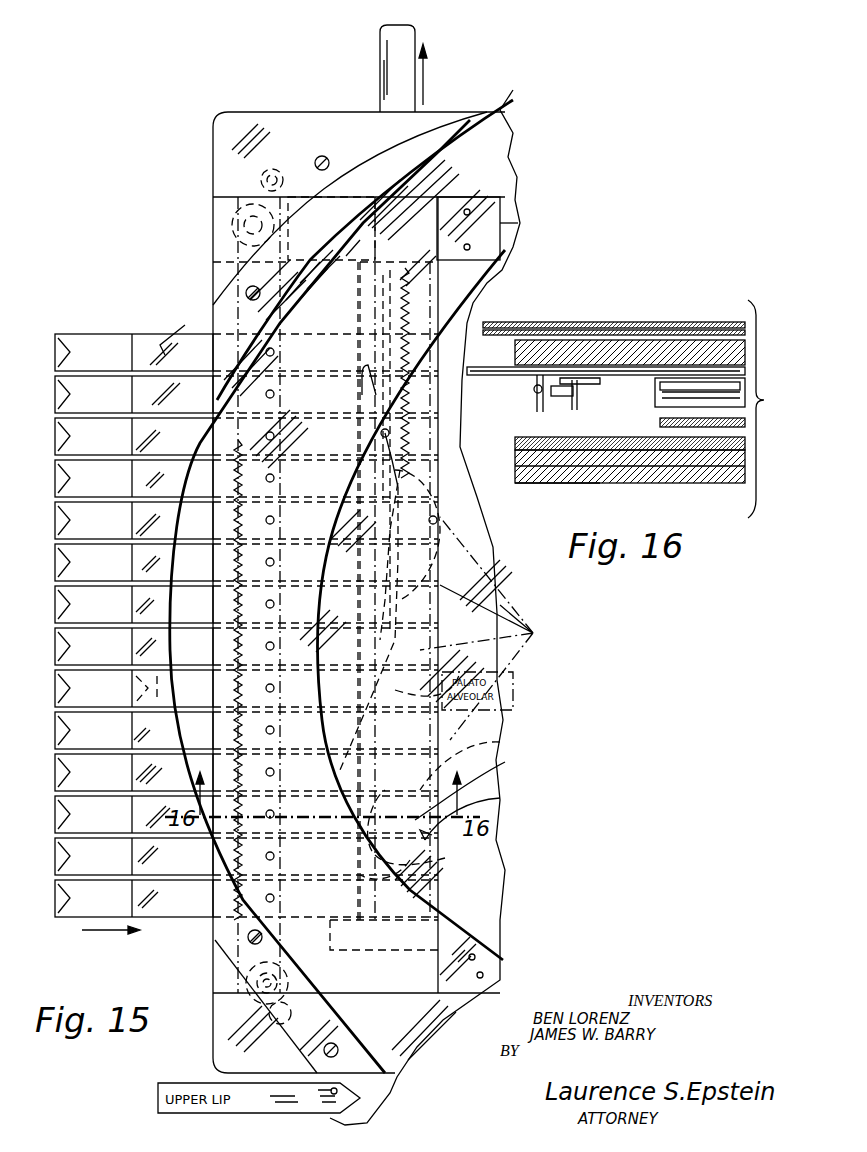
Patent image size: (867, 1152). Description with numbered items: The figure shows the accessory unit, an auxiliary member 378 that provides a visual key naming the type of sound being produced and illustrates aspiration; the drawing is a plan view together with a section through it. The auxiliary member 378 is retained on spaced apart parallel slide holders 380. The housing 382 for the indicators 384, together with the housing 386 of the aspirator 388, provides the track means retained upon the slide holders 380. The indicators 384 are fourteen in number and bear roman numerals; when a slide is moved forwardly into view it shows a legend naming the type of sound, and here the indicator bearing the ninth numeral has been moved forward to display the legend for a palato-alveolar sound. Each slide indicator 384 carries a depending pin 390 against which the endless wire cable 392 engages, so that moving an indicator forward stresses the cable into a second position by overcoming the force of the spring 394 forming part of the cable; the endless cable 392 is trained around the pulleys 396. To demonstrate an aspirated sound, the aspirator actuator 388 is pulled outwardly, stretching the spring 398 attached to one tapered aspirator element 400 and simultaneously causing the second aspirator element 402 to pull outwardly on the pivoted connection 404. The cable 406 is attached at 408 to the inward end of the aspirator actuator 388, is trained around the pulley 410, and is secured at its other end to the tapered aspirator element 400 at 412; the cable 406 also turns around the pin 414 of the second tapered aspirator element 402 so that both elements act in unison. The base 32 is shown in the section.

In FIG. 16, the base plate 32 is at (575, 486).
In FIG. 15, the auxiliary member 378 is at (138, 322).
In FIG. 15, the slide holders 380 is at (325, 200).
In FIG. 15, the housing 382 is at (410, 292).
In FIG. 16, the housing 382 is at (700, 376).
In FIG. 15, the indicators 384 is at (170, 340).
In FIG. 16, the indicators 384 is at (582, 368).
In FIG. 16, the housing 386 is at (655, 395).
In FIG. 15, the aspirator actuator 388 is at (417, 38).
In FIG. 15, the depending pin 390 is at (270, 690).
In FIG. 16, the depending pin 390 is at (580, 406).
In FIG. 15, the endless wire cable 392 is at (265, 585).
In FIG. 16, the endless wire cable 392 is at (541, 378).
In FIG. 15, the spring 394 is at (270, 455).
In FIG. 16, the spring 394 is at (538, 392).
In FIG. 15, the pulleys 396 is at (245, 195).
In FIG. 16, the pulleys 396 is at (564, 398).
In FIG. 15, the spring 398 is at (405, 296).
In FIG. 15, the tapered aspirator element 400 is at (410, 490).
In FIG. 16, the tapered aspirator element 400 is at (722, 472).
In FIG. 15, the second aspirator element 402 is at (500, 742).
In FIG. 16, the second aspirator element 402 is at (665, 446).
In FIG. 15, the pivoted connection 404 is at (536, 633).
In FIG. 15, the cable 406 is at (500, 798).
In FIG. 16, the cable 406 is at (660, 421).
In FIG. 15, the attachment point 408 is at (387, 433).
In FIG. 15, the pulley 410 is at (445, 858).
In FIG. 15, the securing point 412 is at (393, 483).
In FIG. 15, the pin 414 is at (505, 762).